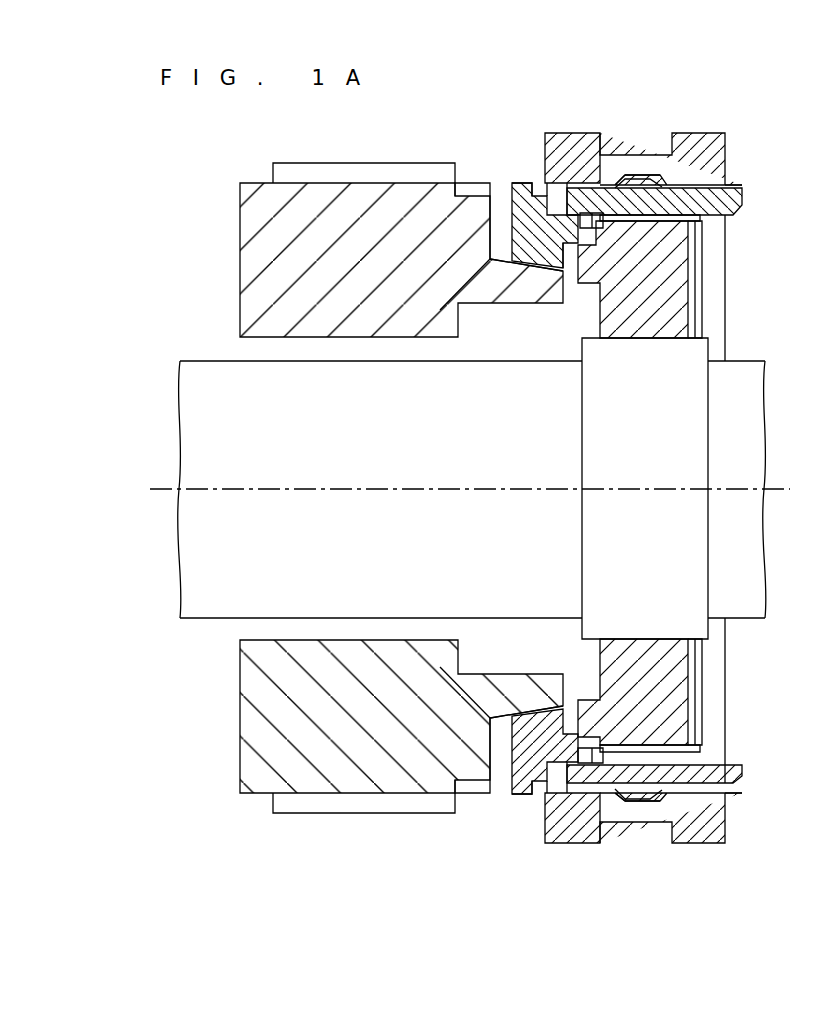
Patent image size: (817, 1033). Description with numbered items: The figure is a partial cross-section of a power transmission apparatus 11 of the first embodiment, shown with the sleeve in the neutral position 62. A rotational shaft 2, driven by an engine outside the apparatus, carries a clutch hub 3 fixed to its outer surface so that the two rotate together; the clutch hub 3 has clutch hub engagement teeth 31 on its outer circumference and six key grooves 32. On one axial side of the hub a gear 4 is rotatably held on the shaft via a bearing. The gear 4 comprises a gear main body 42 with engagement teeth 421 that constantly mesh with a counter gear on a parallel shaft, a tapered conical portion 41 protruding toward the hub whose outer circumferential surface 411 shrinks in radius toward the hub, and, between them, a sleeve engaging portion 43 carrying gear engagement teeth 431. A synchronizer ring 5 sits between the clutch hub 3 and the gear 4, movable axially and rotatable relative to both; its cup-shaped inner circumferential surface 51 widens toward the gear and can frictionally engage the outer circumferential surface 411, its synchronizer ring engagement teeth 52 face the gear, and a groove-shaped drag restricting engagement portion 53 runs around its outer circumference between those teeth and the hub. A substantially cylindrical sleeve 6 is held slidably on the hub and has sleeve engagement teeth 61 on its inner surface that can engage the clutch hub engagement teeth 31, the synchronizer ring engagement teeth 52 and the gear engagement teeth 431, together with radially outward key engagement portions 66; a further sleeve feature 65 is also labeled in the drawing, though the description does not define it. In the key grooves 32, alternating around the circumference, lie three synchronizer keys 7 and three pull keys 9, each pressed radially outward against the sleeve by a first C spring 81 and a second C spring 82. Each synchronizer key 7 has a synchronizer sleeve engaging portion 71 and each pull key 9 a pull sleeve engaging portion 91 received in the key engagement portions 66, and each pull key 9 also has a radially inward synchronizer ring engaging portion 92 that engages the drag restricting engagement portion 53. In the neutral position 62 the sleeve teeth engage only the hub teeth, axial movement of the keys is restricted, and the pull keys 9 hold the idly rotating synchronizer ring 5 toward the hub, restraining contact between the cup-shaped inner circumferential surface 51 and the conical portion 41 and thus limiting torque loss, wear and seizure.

The power transmission apparatus 11 is at (517, 76).
The rotational shaft 2 is at (207, 360).
The clutch hub 3 is at (735, 327).
The clutch hub engagement teeth 31 is at (554, 133).
The key grooves 32 is at (703, 219).
The gear 4 is at (238, 218).
The conical portion 41 is at (530, 288).
The outer circumferential surface 411 is at (500, 257).
The gear main body 42 is at (240, 281).
The engagement teeth 421 is at (288, 163).
The sleeve engaging portion 43 is at (473, 232).
The gear engagement teeth 431 is at (468, 183).
The synchronizer ring 5 is at (538, 193).
The cup-shaped inner circumferential surface 51 is at (580, 275).
The synchronizer ring engagement teeth 52 is at (523, 183).
The drag restricting engagement portion 53 is at (557, 202).
The sleeve 6 is at (702, 131).
The neutral position 62 is at (699, 491).
The sleeve engagement teeth 61 is at (728, 184).
The cover groove 65 is at (618, 170).
The key engagement portions 66 is at (647, 174).
The synchronizer keys 7 is at (752, 779).
The synchronizer sleeve engaging portion 71 is at (655, 802).
The first C spring 81 is at (592, 228).
The second C spring 82 is at (703, 300).
The pull keys 9 is at (748, 195).
The pull sleeve engaging portion 91 is at (664, 178).
The synchronizer ring engaging portion 92 is at (565, 257).